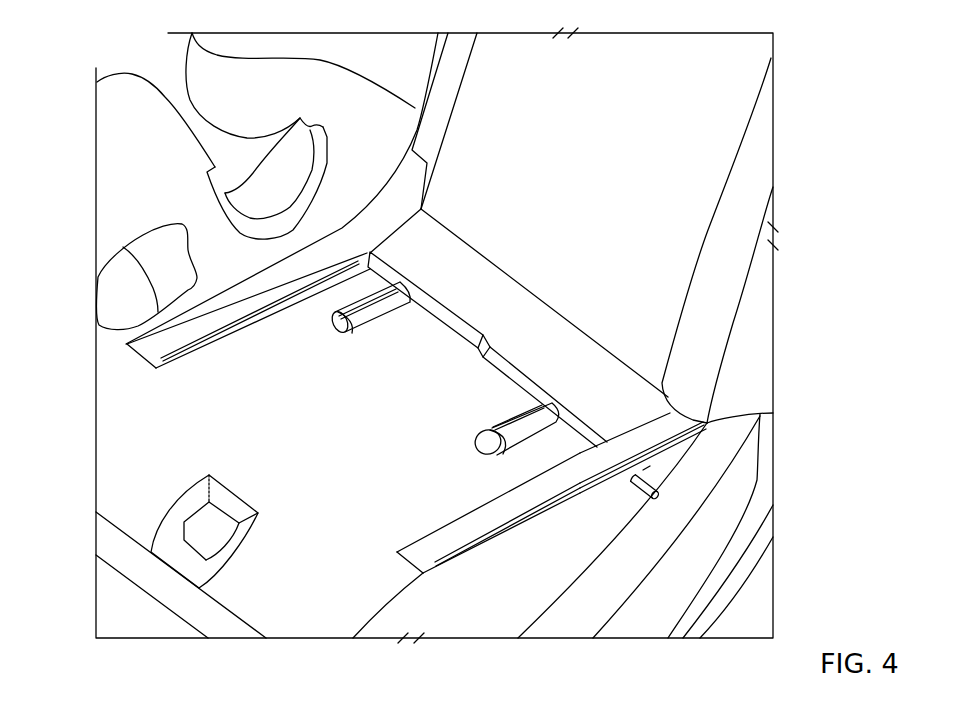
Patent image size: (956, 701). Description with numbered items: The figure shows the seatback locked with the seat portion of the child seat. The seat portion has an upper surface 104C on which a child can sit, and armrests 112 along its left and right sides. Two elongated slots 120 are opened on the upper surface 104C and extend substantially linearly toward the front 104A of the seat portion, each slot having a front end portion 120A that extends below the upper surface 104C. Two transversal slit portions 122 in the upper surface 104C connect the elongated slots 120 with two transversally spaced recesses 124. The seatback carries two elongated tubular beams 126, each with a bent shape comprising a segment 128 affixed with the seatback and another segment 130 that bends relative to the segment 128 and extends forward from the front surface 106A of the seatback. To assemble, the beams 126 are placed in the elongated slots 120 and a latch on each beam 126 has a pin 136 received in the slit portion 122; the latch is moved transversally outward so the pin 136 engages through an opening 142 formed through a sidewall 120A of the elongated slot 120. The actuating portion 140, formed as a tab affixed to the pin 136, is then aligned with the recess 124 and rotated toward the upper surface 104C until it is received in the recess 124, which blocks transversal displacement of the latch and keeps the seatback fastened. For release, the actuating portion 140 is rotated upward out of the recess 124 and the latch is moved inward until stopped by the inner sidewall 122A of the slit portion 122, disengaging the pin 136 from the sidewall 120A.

The front of the seat portion 104A is at (110, 565).
The upper surface 104C is at (127, 440).
The front surface of the seatback 106A is at (680, 47).
The armrest 112 is at (105, 104).
The elongated slot 120 is at (150, 351).
The sidewall of the elongated slot 120A is at (487, 608).
The slit portion 122 is at (449, 312).
The inner sidewall of the slit portion 122A is at (495, 348).
The recess 124 is at (340, 340).
The beam 126 is at (378, 212).
The segment of the beam affixed with the seatback 128 is at (437, 60).
The bent segment of the beam 130 is at (215, 311).
The pin 136 is at (660, 483).
The actuating portion 140 is at (500, 423).
The opening 142 is at (647, 468).